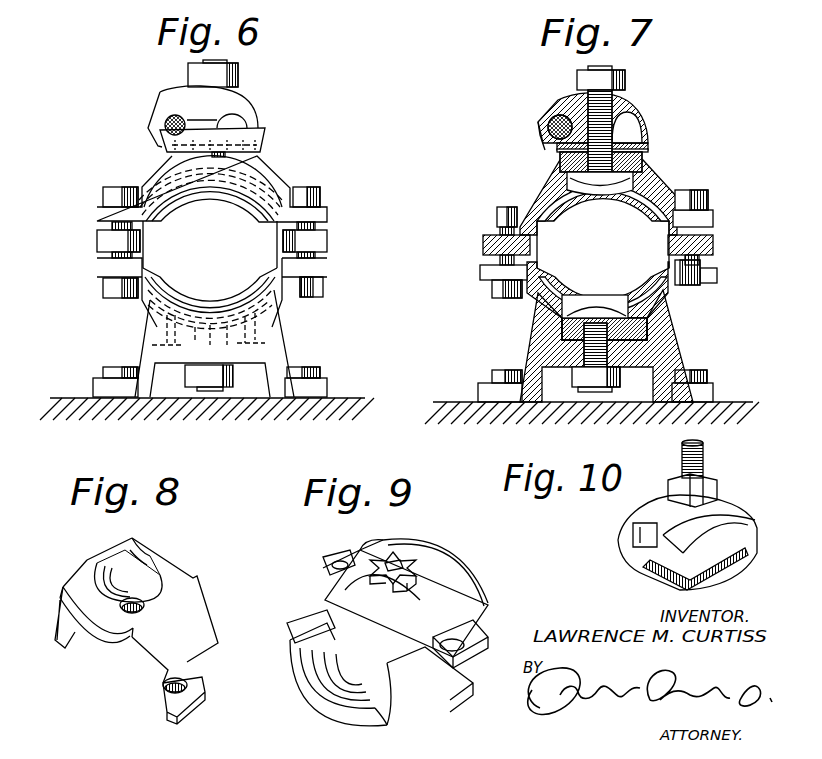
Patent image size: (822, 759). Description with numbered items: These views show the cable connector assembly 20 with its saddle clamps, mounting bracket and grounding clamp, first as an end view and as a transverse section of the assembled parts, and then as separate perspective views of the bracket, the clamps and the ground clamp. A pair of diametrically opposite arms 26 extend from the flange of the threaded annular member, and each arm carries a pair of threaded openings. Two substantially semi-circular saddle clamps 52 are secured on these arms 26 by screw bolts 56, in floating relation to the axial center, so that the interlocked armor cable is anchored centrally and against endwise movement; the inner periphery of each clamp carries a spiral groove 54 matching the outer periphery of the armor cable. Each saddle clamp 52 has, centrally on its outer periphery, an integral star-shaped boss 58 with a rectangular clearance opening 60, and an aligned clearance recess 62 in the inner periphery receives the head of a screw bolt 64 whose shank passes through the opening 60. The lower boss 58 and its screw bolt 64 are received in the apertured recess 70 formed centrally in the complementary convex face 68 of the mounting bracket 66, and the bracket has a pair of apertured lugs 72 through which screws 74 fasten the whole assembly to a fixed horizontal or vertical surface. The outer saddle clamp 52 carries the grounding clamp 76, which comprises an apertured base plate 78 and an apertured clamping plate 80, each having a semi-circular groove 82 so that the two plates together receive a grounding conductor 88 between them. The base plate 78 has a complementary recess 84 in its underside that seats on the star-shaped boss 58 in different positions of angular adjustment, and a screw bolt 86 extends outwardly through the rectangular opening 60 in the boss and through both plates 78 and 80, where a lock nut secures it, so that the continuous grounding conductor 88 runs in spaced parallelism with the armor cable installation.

In FIG. 6, the cable connector assembly 20 is at (199, 251).
In FIG. 7, the cable connector assembly 20 is at (591, 234).
In FIG. 6, the arms 26 is at (97, 241).
In FIG. 7, the arms 26 is at (483, 242).
In FIG. 6, the saddle clamps 52 is at (97, 213).
In FIG. 7, the saddle clamps 52 is at (543, 200).
In FIG. 9, the saddle clamps 52 is at (467, 593).
In FIG. 9, the spiral groove 54 is at (340, 643).
In FIG. 6, the screw bolts 56 is at (105, 187).
In FIG. 7, the screw bolts 56 is at (492, 288).
In FIG. 6, the star-shaped boss 58 is at (260, 162).
In FIG. 7, the star-shaped boss 58 is at (637, 165).
In FIG. 9, the star-shaped boss 58 is at (427, 560).
In FIG. 9, the rectangular clearance opening 60 is at (398, 556).
In FIG. 7, the clearance recess 62 is at (622, 308).
In FIG. 9, the clearance recess 62 is at (383, 713).
In FIG. 6, the screw bolt 64 is at (205, 392).
In FIG. 7, the screw bolt 64 is at (577, 322).
In FIG. 6, the mounting bracket 66 is at (286, 350).
In FIG. 7, the mounting bracket 66 is at (657, 357).
In FIG. 8, the mounting bracket 66 is at (193, 605).
In FIG. 8, the convex face 68 is at (134, 550).
In FIG. 6, the apertured recess 70 is at (152, 345).
In FIG. 7, the apertured recess 70 is at (640, 337).
In FIG. 8, the apertured recess 70 is at (120, 588).
In FIG. 6, the apertured lugs 72 is at (95, 388).
In FIG. 7, the apertured lugs 72 is at (480, 392).
In FIG. 8, the apertured lugs 72 is at (85, 565).
In FIG. 6, the screws 74 is at (104, 367).
In FIG. 7, the screws 74 is at (707, 375).
In FIG. 10, the grounding clamp 76 is at (674, 517).
In FIG. 6, the base plate 78 is at (265, 133).
In FIG. 7, the base plate 78 is at (652, 138).
In FIG. 10, the base plate 78 is at (730, 567).
In FIG. 6, the clamping plate 80 is at (247, 110).
In FIG. 7, the clamping plate 80 is at (630, 110).
In FIG. 10, the clamping plate 80 is at (720, 522).
In FIG. 10, the semi-circular groove 82 is at (657, 573).
In FIG. 7, the complementary recess 84 is at (648, 145).
In FIG. 6, the screw bolt 86 is at (226, 78).
In FIG. 7, the screw bolt 86 is at (607, 107).
In FIG. 10, the screw bolt 86 is at (705, 462).
In FIG. 6, the grounding conductor 88 is at (170, 113).
In FIG. 7, the grounding conductor 88 is at (556, 110).